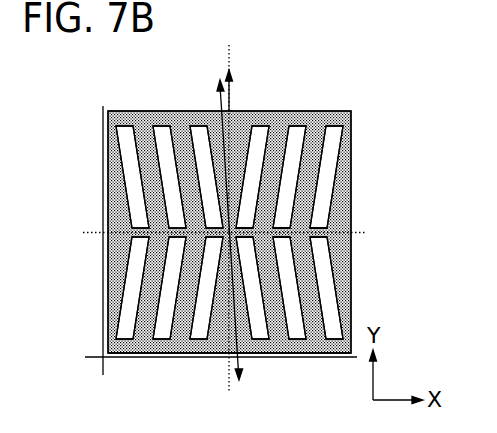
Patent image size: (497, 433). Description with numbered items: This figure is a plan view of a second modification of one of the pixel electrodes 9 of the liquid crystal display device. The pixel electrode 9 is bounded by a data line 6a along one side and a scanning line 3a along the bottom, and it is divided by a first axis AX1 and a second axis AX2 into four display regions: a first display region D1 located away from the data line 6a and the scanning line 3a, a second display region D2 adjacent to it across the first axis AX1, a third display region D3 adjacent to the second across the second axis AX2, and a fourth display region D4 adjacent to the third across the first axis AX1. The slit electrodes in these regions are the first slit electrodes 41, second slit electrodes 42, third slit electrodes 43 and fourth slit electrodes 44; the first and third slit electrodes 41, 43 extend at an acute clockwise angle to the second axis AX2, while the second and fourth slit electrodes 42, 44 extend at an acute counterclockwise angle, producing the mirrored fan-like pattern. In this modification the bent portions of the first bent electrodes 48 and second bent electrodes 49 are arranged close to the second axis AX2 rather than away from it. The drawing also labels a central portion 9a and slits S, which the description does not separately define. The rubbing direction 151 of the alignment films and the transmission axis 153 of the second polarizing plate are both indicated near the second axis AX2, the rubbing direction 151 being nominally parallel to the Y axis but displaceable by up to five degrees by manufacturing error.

The pixel electrode 9 is at (352, 119).
The central connecting bar 9a is at (316, 229).
The first slit electrodes 41 is at (272, 182).
The second slit electrodes 42 is at (275, 292).
The third slit electrodes 43 is at (183, 283).
The fourth slit electrodes 44 is at (180, 165).
The first bent electrodes 48 is at (318, 333).
The second bent electrodes 49 is at (182, 336).
The slots S is at (196, 178).
The scanning line 3a is at (90, 348).
The data line 6a is at (103, 374).
The rubbing direction 151 is at (220, 102).
The transmission axis of the second polarizing plate 153 is at (233, 85).
The first axis AX1 is at (364, 233).
The second axis AX2 is at (226, 63).
The first display region D1 is at (308, 111).
The second display region D2 is at (338, 361).
The third display region D3 is at (203, 362).
The fourth display region D4 is at (150, 111).